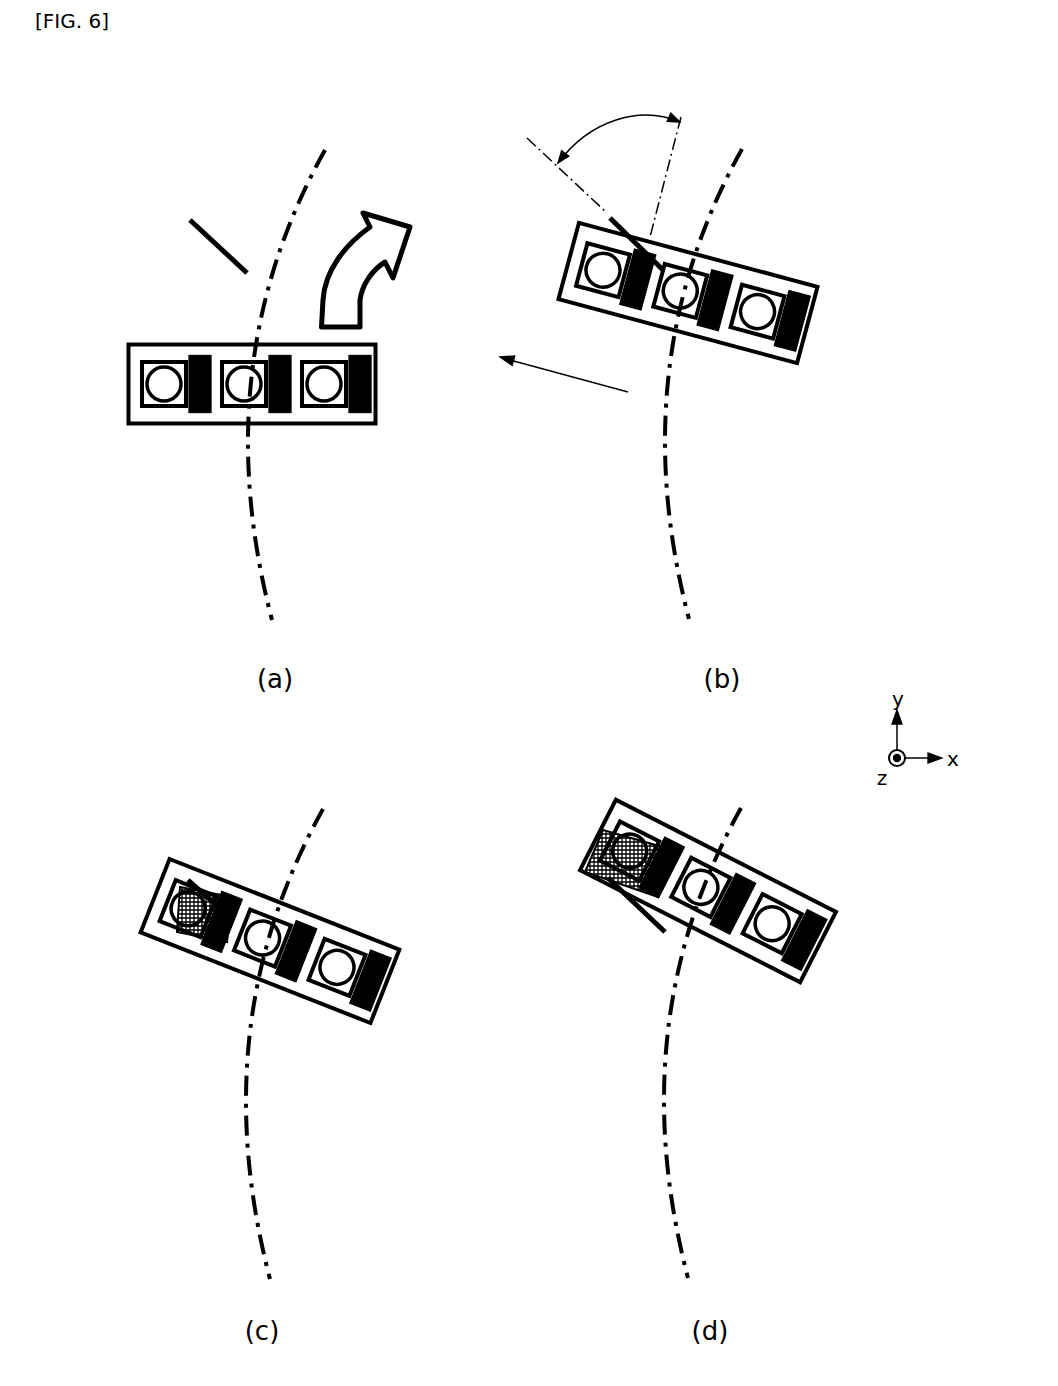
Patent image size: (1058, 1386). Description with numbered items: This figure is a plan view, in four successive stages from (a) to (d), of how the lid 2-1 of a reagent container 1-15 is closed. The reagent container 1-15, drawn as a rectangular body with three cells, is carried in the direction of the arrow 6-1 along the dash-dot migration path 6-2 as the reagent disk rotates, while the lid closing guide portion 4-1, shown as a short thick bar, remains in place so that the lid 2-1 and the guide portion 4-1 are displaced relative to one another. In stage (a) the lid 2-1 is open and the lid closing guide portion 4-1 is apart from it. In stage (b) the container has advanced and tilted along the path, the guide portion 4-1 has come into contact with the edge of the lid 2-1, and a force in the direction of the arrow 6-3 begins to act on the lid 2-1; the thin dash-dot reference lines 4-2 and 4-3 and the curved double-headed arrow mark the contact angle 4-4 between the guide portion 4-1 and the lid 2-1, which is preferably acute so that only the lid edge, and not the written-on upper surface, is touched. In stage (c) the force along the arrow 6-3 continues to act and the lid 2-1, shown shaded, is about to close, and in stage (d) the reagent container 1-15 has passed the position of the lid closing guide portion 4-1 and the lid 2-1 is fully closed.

The reagent container 1-15 is at (213, 368).
The lid 2-1 is at (198, 412).
The lid closing guide portion 4-1 is at (202, 218).
The module axis line 4-2 is at (680, 132).
The bar axis line 4-3 is at (577, 203).
The contact angle 4-4 is at (617, 122).
The arrow 6-1 is at (382, 227).
The migration path 6-2 is at (303, 178).
The arrow 6-3 is at (522, 375).